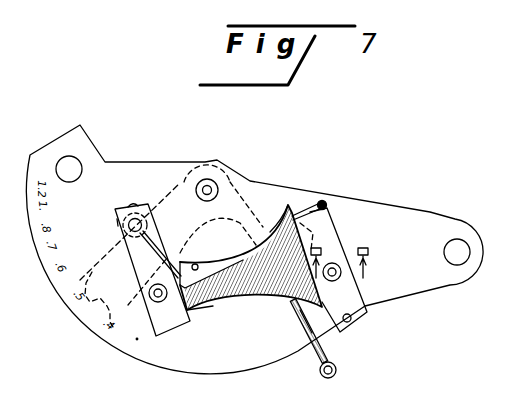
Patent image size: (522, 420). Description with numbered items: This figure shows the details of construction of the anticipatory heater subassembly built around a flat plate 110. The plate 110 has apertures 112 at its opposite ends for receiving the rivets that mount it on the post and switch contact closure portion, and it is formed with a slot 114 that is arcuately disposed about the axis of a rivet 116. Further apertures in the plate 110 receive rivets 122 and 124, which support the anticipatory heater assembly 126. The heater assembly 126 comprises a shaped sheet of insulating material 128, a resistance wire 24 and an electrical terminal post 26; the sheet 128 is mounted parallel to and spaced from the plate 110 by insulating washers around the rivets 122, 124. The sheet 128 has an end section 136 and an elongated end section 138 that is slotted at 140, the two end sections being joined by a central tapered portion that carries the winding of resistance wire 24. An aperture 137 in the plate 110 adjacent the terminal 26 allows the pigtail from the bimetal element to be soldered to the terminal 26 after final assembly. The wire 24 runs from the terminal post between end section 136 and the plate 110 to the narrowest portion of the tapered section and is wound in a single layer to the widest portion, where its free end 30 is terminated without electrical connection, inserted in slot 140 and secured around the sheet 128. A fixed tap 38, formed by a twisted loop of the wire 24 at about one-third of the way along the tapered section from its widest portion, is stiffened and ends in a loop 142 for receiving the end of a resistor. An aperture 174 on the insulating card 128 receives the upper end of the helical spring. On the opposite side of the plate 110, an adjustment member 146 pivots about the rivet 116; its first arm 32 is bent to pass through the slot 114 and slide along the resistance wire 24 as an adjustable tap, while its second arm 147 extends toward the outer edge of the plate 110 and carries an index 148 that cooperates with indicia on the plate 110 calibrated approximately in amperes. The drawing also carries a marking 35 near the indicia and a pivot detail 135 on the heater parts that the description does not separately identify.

The flat plate 110 is at (143, 162).
The apertures 112 is at (75, 160).
The rivet 116 is at (208, 178).
The adjustment member 146 is at (233, 190).
The first arm 32 is at (242, 222).
The slot 114 is at (201, 266).
The end section 136 is at (140, 272).
The aperture 137 is at (135, 206).
The electrical terminal post 26 is at (117, 222).
The pivot pin 135 is at (152, 245).
The rivet 124 is at (161, 302).
The second arm 147 is at (92, 272).
The index 148 is at (90, 316).
The scale 35 is at (138, 348).
The resistance wire 24 is at (252, 298).
The anticipatory heater assembly 126 is at (214, 308).
The free end 30 is at (304, 214).
The slot 140 is at (330, 211).
The elongated end section 138 is at (334, 231).
The rivet 122 is at (341, 281).
The aperture 174 is at (353, 318).
The fixed tap 38 is at (306, 360).
The sheet of insulating material 128 is at (312, 321).
The loop 142 is at (338, 368).